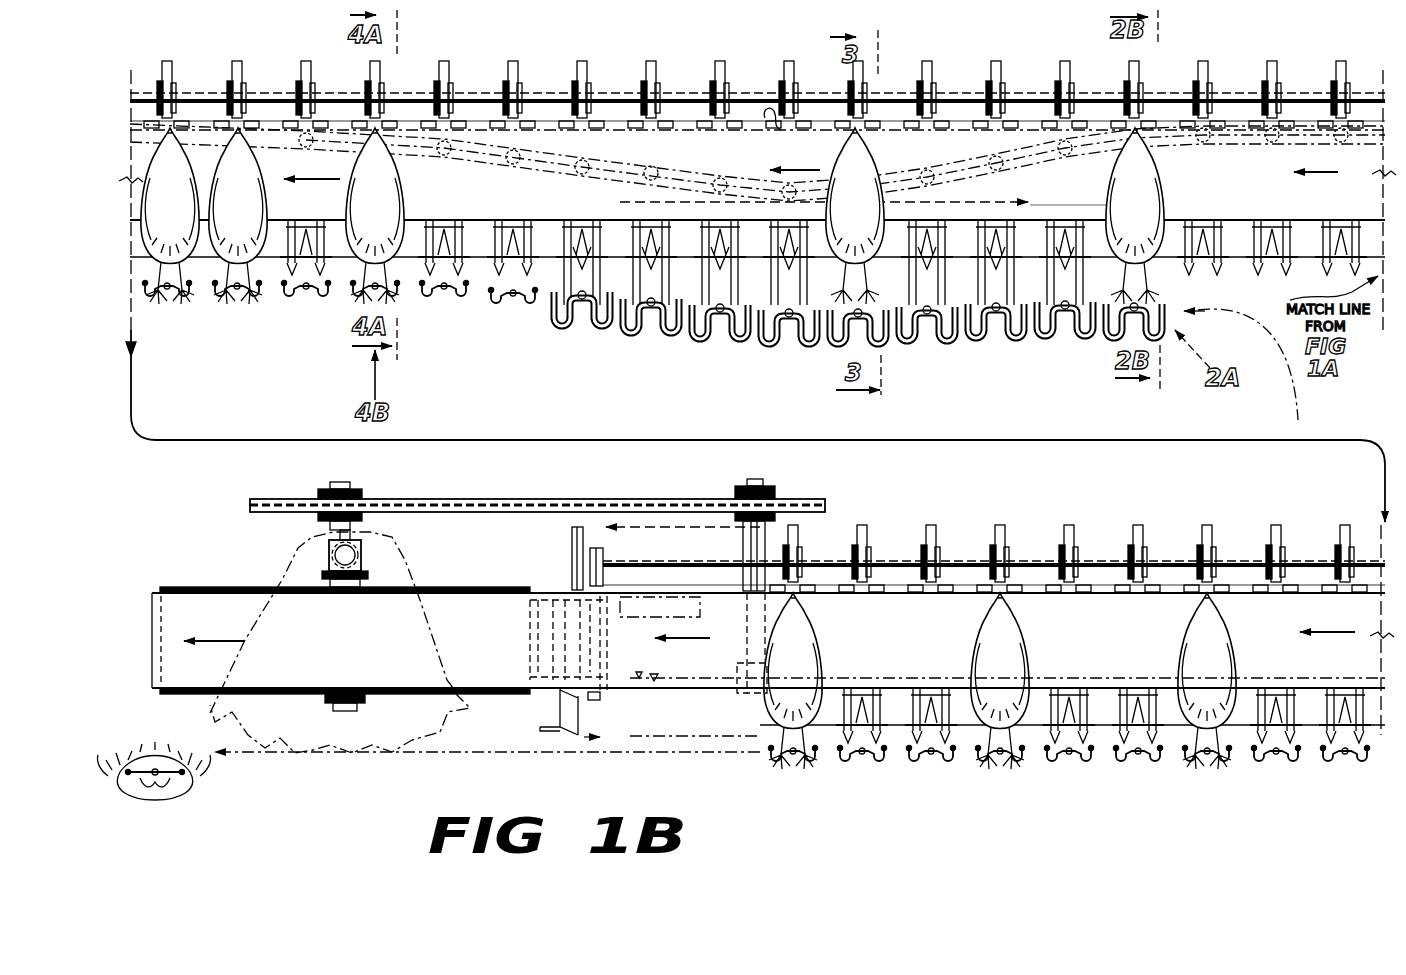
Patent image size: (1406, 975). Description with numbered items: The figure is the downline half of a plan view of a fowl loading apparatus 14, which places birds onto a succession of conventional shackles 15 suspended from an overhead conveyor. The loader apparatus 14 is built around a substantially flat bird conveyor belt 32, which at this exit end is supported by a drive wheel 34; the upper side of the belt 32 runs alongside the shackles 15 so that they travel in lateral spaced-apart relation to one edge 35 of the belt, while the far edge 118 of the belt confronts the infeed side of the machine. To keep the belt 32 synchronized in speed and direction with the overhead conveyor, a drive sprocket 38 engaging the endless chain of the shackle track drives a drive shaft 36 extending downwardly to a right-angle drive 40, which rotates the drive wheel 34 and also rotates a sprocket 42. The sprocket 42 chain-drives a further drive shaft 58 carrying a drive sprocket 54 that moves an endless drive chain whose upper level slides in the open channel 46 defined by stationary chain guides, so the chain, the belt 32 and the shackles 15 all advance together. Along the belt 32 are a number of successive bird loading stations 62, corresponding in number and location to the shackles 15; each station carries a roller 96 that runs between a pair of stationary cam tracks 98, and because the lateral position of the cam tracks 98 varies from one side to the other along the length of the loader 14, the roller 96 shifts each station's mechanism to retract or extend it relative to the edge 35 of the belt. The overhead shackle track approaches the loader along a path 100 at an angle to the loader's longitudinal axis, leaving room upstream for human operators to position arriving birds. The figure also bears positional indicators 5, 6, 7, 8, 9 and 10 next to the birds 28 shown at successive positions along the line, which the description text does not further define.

The station 5 is at (240, 335).
The station 6 is at (172, 335).
The station 7 is at (1207, 780).
The station 8 is at (1000, 780).
The station 9 is at (793, 780).
The station 10 is at (152, 805).
The loader apparatus 14 is at (712, 55).
The shackles 15 is at (958, 340).
The bird 28 is at (1150, 182).
The conveyor belt 32 is at (1274, 184).
The drive wheel 34 is at (450, 590).
The edge of the belt 35 is at (542, 690).
The drive shaft 36 is at (356, 554).
The drive sprocket 38 is at (448, 730).
The right-angle drive 40 is at (332, 548).
The sprocket 42 is at (398, 502).
The open channel 46 is at (620, 202).
The drive sprocket 54 is at (680, 680).
The drive shaft 58 is at (752, 634).
The bird loading stations 62 is at (1040, 212).
The roller 96 is at (648, 178).
The cam tracks 98 is at (692, 190).
The path 100 is at (1215, 312).
The far edge of the bird conveyor belt 118 is at (768, 118).